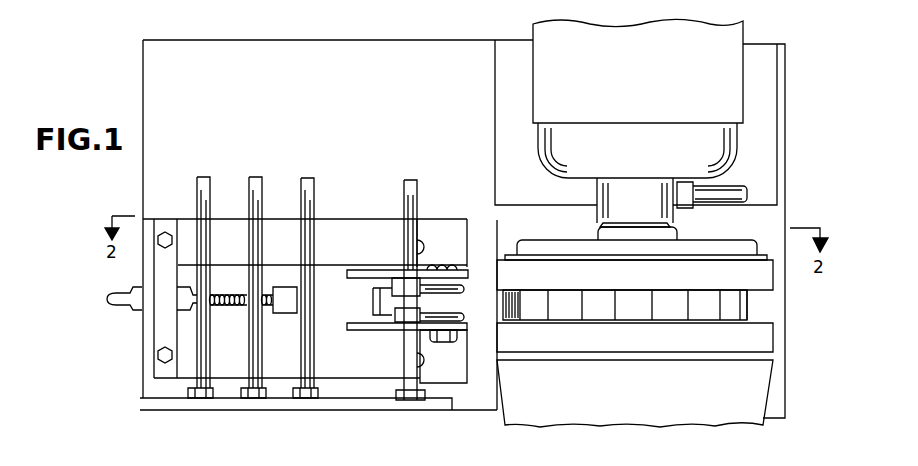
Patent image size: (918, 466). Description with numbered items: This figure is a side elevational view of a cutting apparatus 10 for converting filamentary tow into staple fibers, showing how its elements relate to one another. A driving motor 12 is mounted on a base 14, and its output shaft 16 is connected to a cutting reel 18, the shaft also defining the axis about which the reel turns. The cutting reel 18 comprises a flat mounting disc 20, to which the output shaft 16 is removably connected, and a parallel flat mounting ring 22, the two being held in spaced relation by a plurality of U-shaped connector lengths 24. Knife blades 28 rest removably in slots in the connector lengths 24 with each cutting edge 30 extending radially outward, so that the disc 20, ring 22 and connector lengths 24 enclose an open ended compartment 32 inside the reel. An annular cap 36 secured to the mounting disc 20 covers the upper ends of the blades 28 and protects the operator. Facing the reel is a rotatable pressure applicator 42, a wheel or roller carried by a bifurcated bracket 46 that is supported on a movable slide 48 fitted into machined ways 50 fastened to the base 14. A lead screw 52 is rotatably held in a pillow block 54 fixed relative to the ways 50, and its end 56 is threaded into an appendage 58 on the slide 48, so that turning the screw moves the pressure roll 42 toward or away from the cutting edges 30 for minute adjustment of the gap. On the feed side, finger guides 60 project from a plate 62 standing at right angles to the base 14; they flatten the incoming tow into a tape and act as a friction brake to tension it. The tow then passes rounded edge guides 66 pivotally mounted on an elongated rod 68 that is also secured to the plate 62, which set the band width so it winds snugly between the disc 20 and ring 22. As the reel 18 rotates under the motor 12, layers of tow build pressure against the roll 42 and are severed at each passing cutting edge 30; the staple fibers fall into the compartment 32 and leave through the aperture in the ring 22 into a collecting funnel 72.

The cutting apparatus 10 is at (787, 220).
The driving motor 12 is at (622, 73).
The base 14 is at (392, 73).
The output shaft 16 is at (677, 236).
The cutting reel 18 is at (773, 315).
The mounting disc 20 is at (770, 282).
The mounting ring 22 is at (770, 340).
The U-shaped connector lengths 24 is at (546, 311).
The knife blades 28 is at (519, 314).
The cutting edge 30 is at (748, 305).
The open ended compartment 32 is at (643, 309).
The annular cap 36 is at (562, 242).
The pressure applicator 42 is at (431, 300).
The bifurcated bracket 46 is at (350, 270).
The movable slide 48 is at (320, 267).
The machined ways 50 is at (350, 228).
The lead screw 52 is at (122, 294).
The pillow block 54 is at (160, 220).
The end of lead screw 56 is at (266, 293).
The appendage 58 is at (292, 316).
The finger guides 60 is at (253, 178).
The plate 62 is at (220, 399).
The rounded edge guides 66 is at (428, 272).
The elongated rod 68 is at (413, 180).
The collecting funnel 72 is at (752, 402).